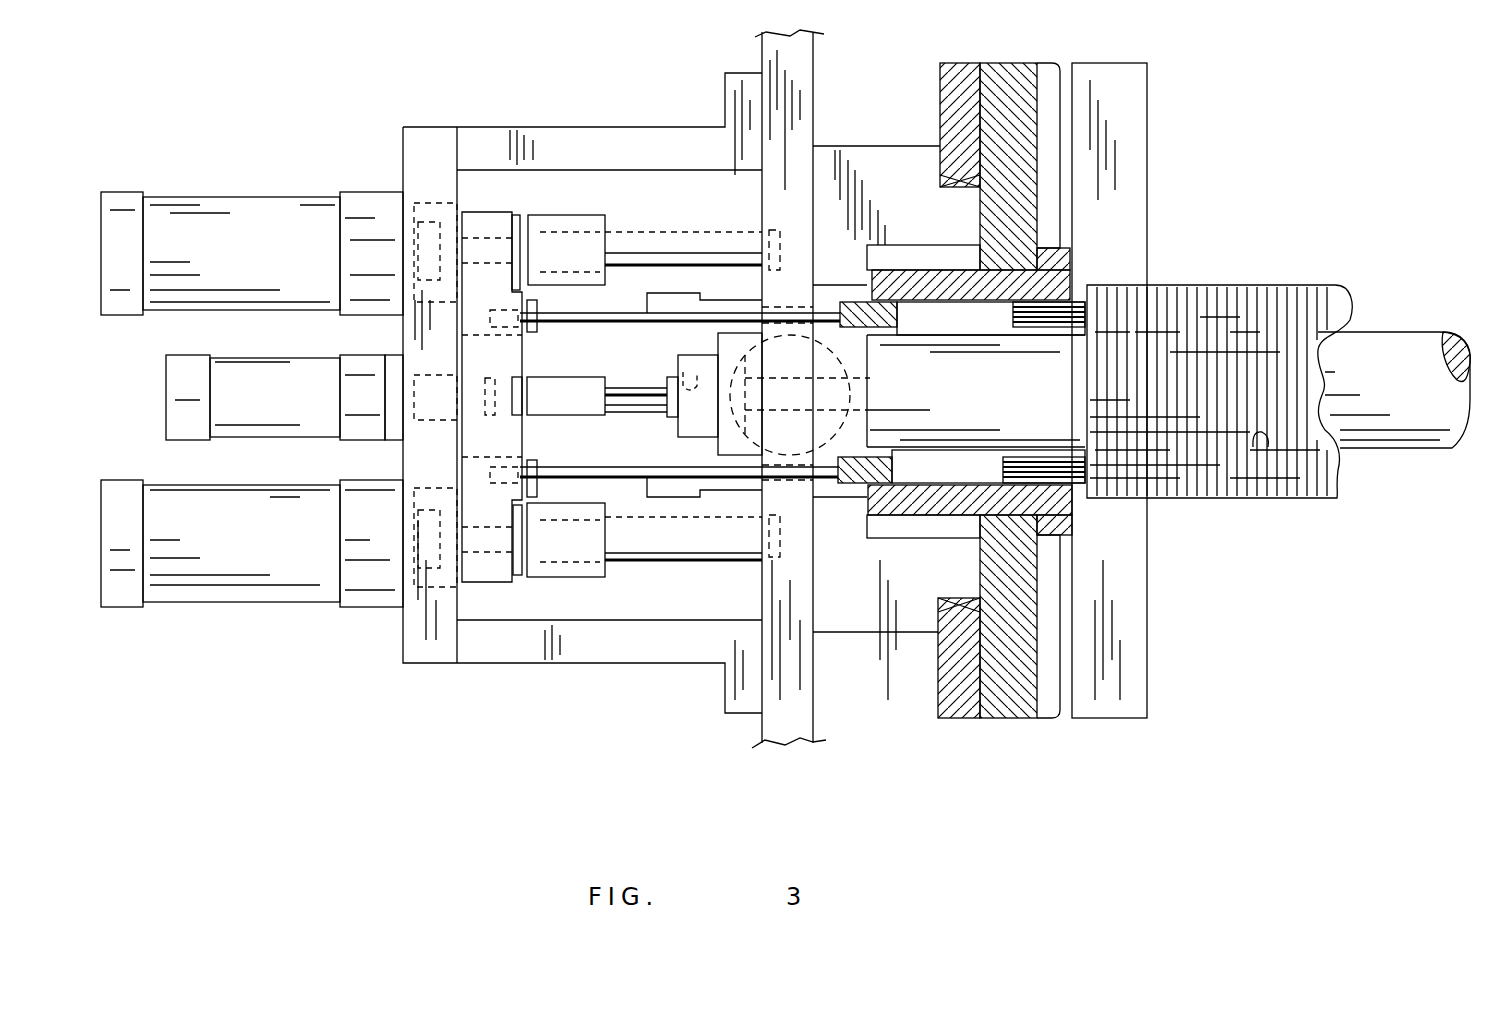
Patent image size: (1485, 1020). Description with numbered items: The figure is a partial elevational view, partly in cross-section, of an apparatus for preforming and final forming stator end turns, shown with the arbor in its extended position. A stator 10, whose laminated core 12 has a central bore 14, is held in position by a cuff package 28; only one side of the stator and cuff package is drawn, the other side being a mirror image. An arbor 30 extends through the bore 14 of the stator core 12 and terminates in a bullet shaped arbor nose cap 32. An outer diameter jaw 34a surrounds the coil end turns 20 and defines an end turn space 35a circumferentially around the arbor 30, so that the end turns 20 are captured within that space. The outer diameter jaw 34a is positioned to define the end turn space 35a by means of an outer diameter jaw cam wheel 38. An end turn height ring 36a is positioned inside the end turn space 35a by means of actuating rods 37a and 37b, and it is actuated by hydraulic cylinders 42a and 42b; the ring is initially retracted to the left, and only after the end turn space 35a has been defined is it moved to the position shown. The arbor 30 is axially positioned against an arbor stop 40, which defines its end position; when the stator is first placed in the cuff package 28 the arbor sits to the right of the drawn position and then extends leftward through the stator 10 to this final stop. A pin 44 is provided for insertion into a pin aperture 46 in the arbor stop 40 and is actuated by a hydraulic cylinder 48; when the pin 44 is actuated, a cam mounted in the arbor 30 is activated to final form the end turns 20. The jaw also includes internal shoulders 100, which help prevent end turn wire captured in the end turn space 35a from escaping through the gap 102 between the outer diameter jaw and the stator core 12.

The stator 10 is at (1249, 272).
The core 12 is at (1295, 300).
The central bore 14 is at (1268, 447).
The end turns 20 is at (1085, 262).
The cuff package 28 is at (1128, 128).
The arbor 30 is at (983, 402).
The arbor nose cap 32 is at (830, 433).
The outer diameter jaw 34a is at (912, 508).
The end turn space 35a is at (922, 320).
The end turn height ring 36a is at (856, 487).
The actuating rod 37a is at (567, 473).
The actuating rod 37b is at (563, 320).
The outer diameter jaw cam wheel 38 is at (1005, 702).
The arbor stop 40 is at (687, 437).
The hydraulic cylinder 42a is at (230, 573).
The hydraulic cylinder 42b is at (225, 228).
The pin 44 is at (620, 387).
The pin aperture 46 is at (677, 387).
The hydraulic cylinder 48 is at (281, 407).
The internal shoulders 100 is at (1075, 473).
The gap 102 is at (1080, 287).